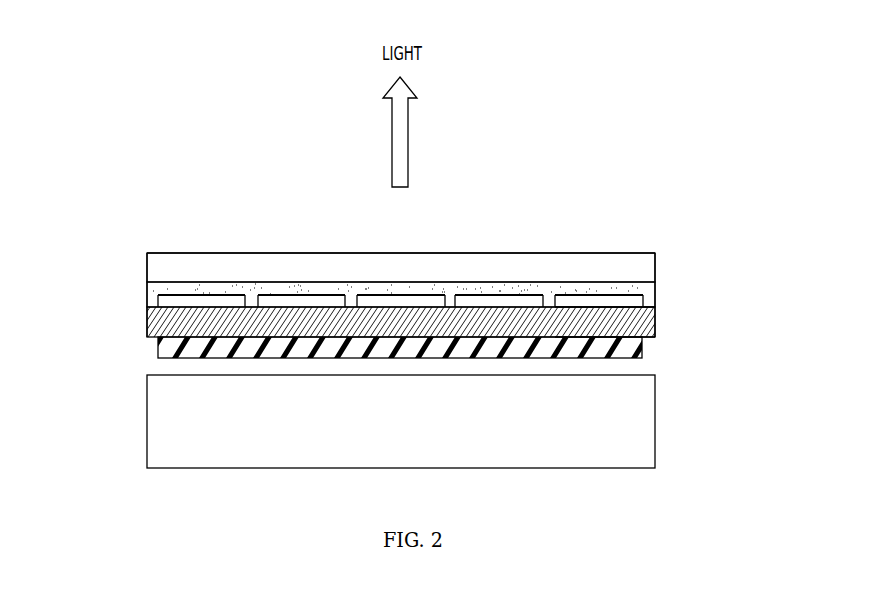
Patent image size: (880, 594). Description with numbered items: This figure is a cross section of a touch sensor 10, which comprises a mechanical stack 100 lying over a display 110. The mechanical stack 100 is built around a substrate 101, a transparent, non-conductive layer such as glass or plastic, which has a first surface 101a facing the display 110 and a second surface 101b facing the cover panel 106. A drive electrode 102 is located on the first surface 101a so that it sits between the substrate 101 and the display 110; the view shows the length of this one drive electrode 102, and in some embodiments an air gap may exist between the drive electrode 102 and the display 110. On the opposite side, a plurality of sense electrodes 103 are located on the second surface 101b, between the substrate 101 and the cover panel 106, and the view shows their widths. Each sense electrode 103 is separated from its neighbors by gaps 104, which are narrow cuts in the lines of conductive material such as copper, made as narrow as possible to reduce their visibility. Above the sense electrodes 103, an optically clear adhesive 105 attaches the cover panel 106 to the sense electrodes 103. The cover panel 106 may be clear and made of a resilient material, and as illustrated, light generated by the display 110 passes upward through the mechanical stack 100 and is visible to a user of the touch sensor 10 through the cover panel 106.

The touch sensor 10 is at (109, 176).
The mechanical stack 100 is at (742, 252).
The substrate 101 is at (146, 322).
The first surface 101a is at (644, 355).
The second surface 101b is at (620, 305).
The drive electrode 102 is at (162, 347).
The sense electrodes 103 is at (200, 297).
The gaps 104 is at (252, 297).
The optically clear adhesive 105 is at (155, 293).
The cover panel 106 is at (157, 262).
The display 110 is at (633, 433).